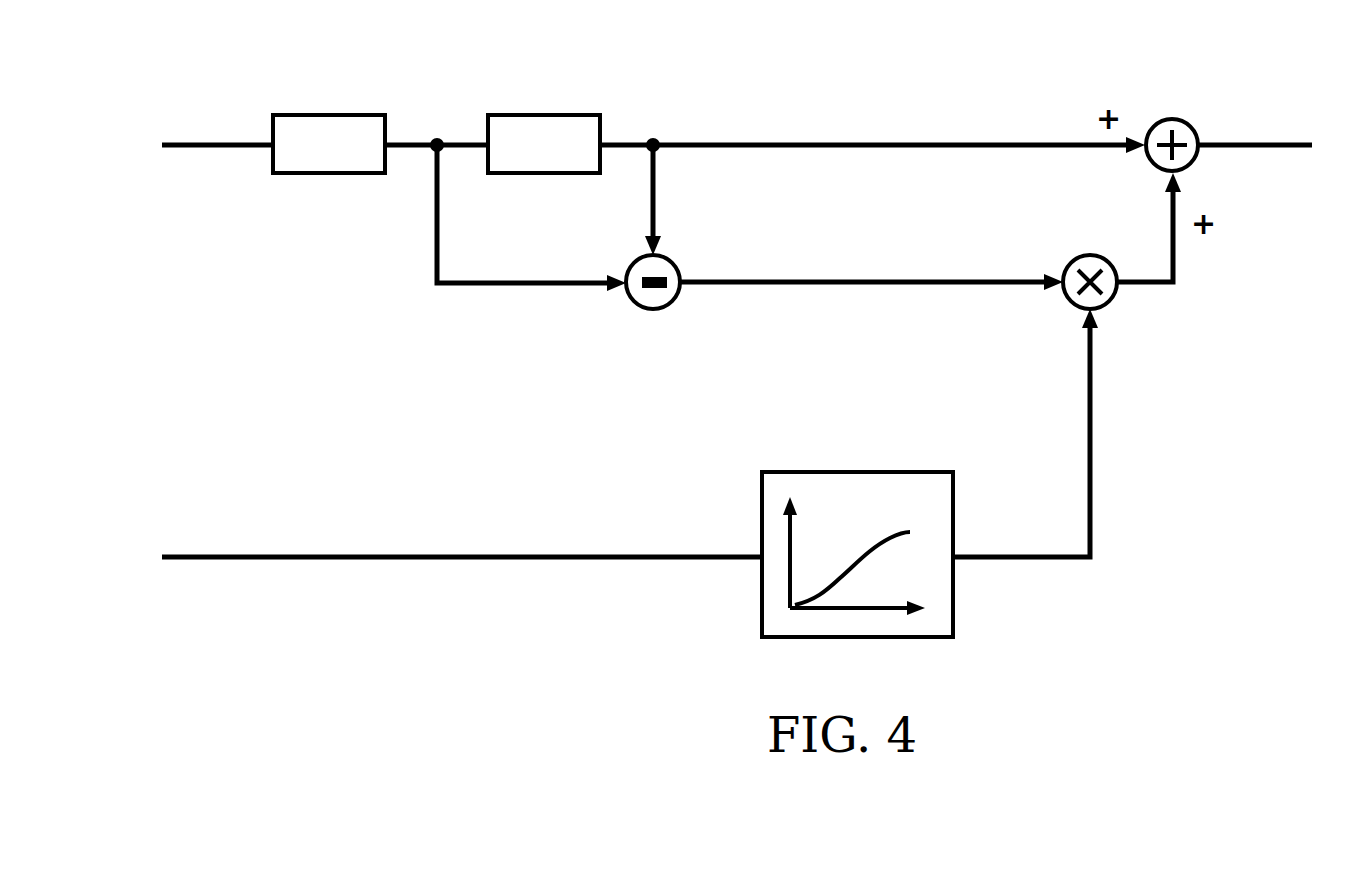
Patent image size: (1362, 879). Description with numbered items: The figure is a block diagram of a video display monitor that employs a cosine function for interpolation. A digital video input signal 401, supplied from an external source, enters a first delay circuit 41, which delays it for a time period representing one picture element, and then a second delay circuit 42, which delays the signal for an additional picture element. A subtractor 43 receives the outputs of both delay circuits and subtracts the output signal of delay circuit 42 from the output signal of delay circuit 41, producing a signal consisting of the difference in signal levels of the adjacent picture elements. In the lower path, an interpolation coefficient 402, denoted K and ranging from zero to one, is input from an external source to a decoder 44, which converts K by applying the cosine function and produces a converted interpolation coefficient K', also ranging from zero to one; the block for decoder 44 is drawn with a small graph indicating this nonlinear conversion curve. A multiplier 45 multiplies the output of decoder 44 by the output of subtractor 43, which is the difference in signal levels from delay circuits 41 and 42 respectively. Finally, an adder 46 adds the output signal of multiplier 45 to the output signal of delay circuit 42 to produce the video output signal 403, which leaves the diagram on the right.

The digital video input signal 401 is at (218, 140).
The delay circuit 41 is at (328, 115).
The delay circuit 42 is at (543, 115).
The subtractor 43 is at (677, 268).
The decoder 44 is at (870, 472).
The multiplier 45 is at (1090, 255).
The adder 46 is at (1172, 118).
The interpolation coefficient 402 is at (218, 553).
The video output signal 403 is at (1252, 140).